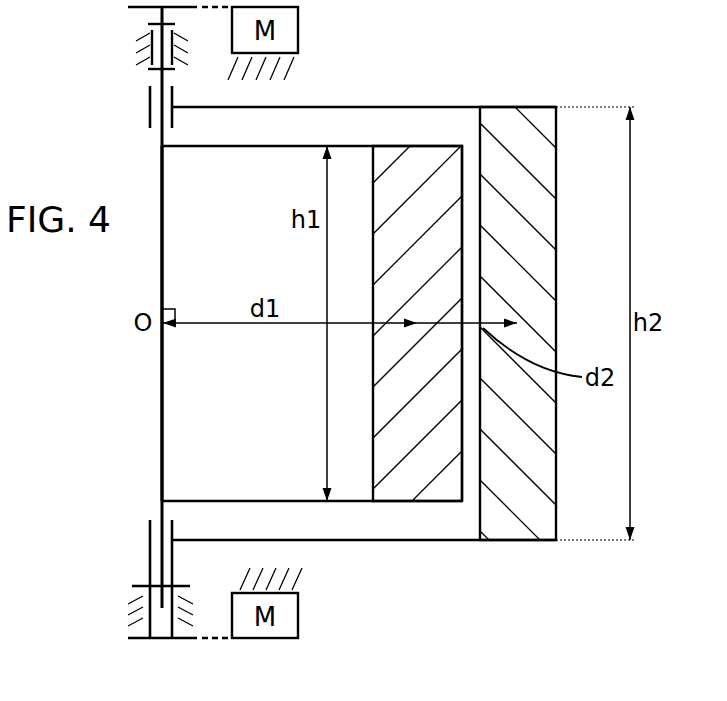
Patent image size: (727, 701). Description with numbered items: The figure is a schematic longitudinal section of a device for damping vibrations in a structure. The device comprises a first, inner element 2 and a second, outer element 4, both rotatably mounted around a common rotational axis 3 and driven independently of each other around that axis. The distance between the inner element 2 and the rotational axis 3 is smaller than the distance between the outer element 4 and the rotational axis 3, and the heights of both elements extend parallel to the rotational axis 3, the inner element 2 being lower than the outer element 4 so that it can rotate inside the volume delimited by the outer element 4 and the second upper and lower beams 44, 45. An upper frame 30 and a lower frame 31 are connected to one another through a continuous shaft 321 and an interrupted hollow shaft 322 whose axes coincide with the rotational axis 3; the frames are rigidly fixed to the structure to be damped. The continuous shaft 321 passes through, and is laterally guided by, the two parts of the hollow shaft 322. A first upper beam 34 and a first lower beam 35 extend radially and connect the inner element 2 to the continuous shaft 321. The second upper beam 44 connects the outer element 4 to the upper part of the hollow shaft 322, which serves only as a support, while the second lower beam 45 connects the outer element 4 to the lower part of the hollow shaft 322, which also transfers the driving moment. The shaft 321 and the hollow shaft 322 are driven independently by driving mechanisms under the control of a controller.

The first element 2 is at (407, 483).
The rotational axis 3 is at (161, 508).
The second element 4 is at (513, 520).
The upper frame 30 is at (148, 47).
The lower frame 31 is at (130, 602).
The first upper beam 34 is at (302, 145).
The first lower beam 35 is at (351, 503).
The second upper beam 44 is at (408, 107).
The second lower beam 45 is at (435, 542).
The continuous shaft 321 is at (160, 381).
The interrupted hollow shaft 322 is at (148, 102).